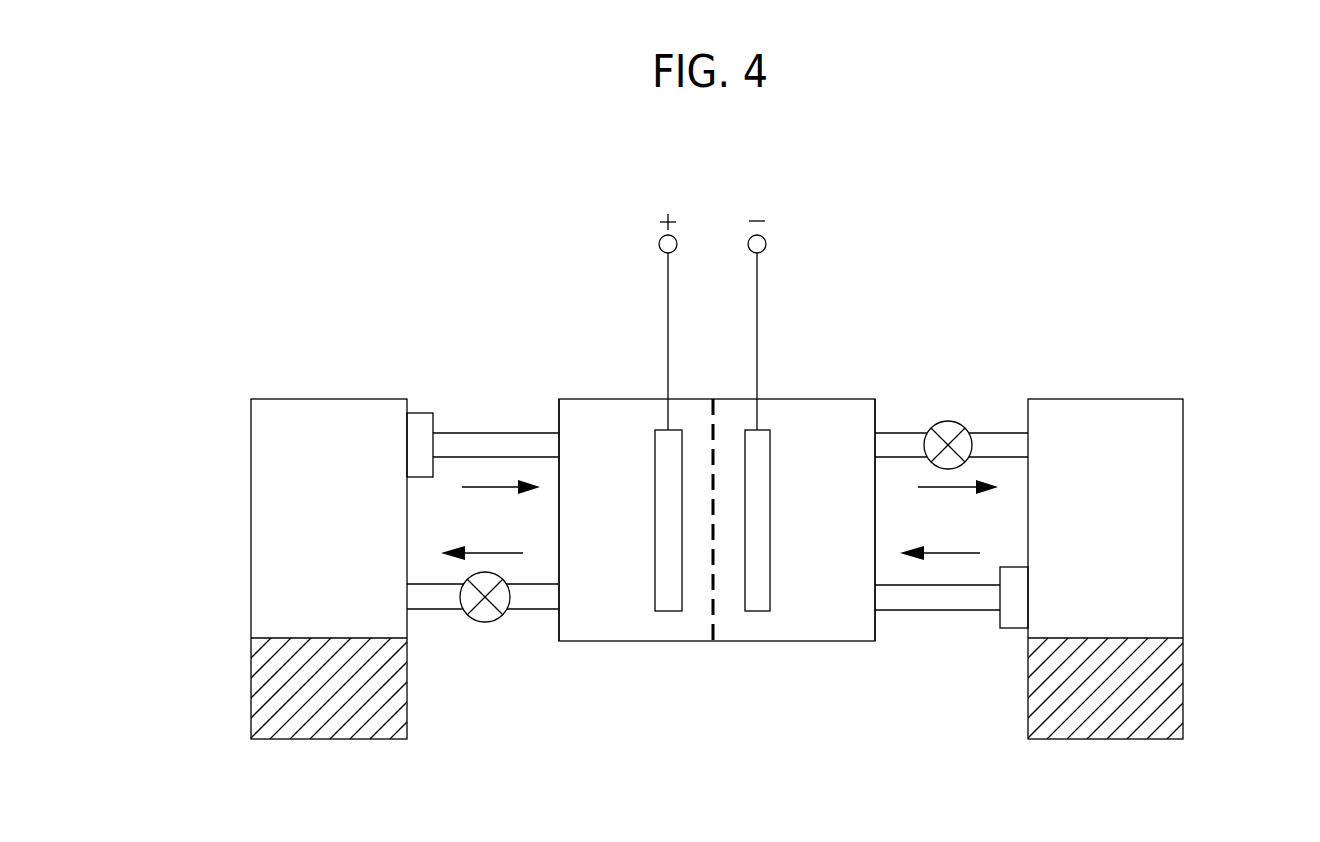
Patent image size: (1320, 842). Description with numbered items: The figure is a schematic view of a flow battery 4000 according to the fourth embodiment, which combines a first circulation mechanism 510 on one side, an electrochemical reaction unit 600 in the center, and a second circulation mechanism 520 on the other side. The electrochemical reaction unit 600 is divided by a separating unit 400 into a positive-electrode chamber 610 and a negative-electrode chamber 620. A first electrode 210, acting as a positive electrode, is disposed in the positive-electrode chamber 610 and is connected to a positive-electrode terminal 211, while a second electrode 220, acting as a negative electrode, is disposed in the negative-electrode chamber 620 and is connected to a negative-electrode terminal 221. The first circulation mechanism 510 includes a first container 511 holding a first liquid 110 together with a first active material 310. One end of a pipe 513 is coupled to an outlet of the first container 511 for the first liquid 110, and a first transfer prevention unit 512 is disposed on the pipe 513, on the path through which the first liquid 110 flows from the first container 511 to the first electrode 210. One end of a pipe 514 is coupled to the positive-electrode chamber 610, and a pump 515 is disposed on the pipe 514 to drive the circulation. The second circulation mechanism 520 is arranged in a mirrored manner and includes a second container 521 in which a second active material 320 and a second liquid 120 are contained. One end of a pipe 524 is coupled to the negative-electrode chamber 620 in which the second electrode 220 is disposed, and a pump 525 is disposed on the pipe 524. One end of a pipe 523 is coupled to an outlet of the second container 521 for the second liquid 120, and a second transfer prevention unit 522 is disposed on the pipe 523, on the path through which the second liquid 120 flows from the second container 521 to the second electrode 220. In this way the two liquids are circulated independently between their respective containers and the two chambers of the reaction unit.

The flow battery 4000 is at (739, 142).
The first circulation mechanism 510 is at (361, 365).
The first container 511 is at (262, 434).
The first active material 310 is at (270, 663).
The first transfer prevention unit 512 is at (416, 423).
The pipe 513 is at (493, 445).
The pipe 514 is at (536, 600).
The pump 515 is at (485, 622).
The first liquid 110 is at (472, 488).
The electrochemical reaction unit 600 is at (826, 641).
The positive-electrode chamber 610 is at (592, 425).
The negative-electrode chamber 620 is at (822, 425).
The separating unit 400 is at (713, 400).
The first electrode 210 is at (668, 600).
The second electrode 220 is at (760, 600).
The positive-electrode terminal 211 is at (658, 245).
The negative-electrode terminal 221 is at (768, 244).
The pipe 524 is at (897, 440).
The pump 525 is at (950, 422).
The pipe 523 is at (935, 597).
The second liquid 120 is at (930, 488).
The second circulation mechanism 520 is at (1080, 365).
The second container 521 is at (1158, 432).
The second active material 320 is at (1170, 674).
The second transfer prevention unit 522 is at (1015, 613).